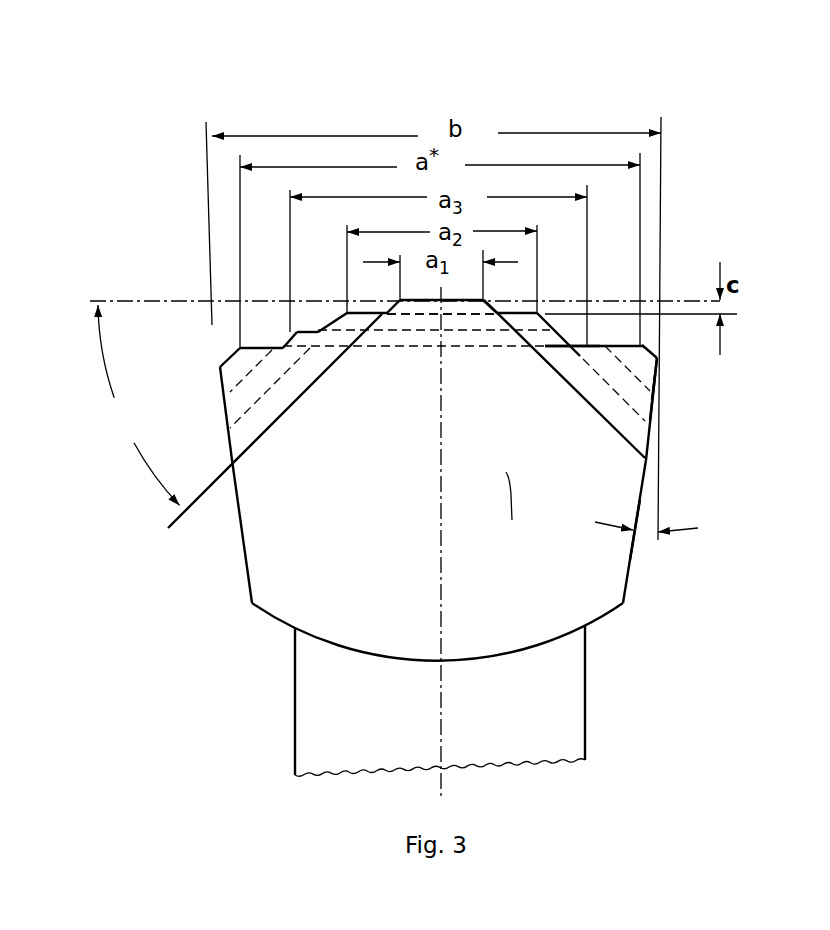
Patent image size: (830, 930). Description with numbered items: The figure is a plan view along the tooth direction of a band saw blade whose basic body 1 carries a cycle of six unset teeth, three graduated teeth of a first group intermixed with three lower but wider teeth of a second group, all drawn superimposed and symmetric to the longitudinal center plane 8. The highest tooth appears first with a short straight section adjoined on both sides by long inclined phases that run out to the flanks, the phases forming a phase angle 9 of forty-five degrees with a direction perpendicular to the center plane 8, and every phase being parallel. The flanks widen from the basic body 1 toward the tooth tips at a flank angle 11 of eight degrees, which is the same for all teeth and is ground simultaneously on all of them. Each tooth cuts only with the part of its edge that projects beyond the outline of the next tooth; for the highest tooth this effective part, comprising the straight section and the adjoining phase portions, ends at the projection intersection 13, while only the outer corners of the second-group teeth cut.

The basic body 1 is at (547, 728).
The longitudinal center plane 8 is at (443, 697).
The phase angle 9 is at (139, 405).
The flank angle 11 is at (649, 514).
The projection intersection 13 is at (495, 305).